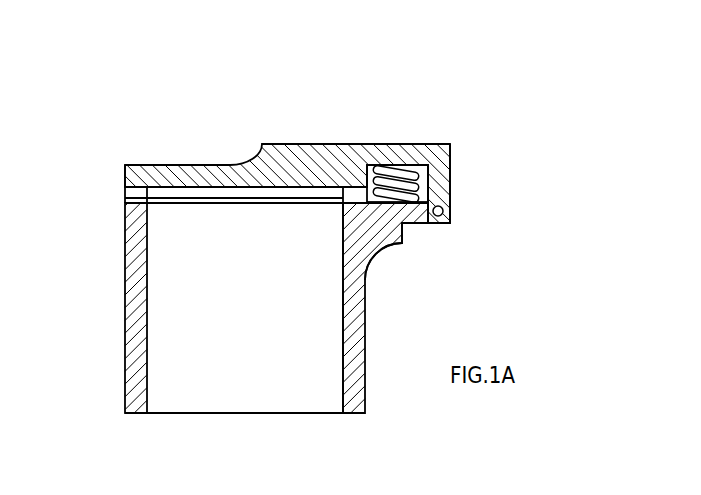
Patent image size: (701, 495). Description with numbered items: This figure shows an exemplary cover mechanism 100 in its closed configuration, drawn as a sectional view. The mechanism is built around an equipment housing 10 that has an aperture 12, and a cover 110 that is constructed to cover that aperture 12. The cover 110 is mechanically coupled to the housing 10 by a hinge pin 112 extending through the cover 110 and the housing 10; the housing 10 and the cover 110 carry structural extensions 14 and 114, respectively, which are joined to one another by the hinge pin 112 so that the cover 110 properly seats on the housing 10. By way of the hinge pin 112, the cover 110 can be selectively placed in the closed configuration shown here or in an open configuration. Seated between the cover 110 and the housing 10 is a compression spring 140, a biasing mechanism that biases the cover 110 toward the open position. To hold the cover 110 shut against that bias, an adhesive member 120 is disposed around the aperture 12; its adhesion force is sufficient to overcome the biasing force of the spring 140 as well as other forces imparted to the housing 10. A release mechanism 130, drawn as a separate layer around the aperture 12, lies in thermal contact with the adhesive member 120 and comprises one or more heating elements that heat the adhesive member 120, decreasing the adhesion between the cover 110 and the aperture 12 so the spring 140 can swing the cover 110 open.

The cover mechanism 100 is at (467, 109).
The equipment housing 10 is at (131, 316).
The aperture 12 is at (342, 205).
The structural extension 14 is at (398, 244).
The cover 110 is at (292, 148).
The hinge pin 112 is at (447, 214).
The structural extension 114 is at (451, 187).
The adhesive member 120 is at (125, 193).
The release mechanism 130 is at (125, 200).
The compression spring 140 is at (410, 180).